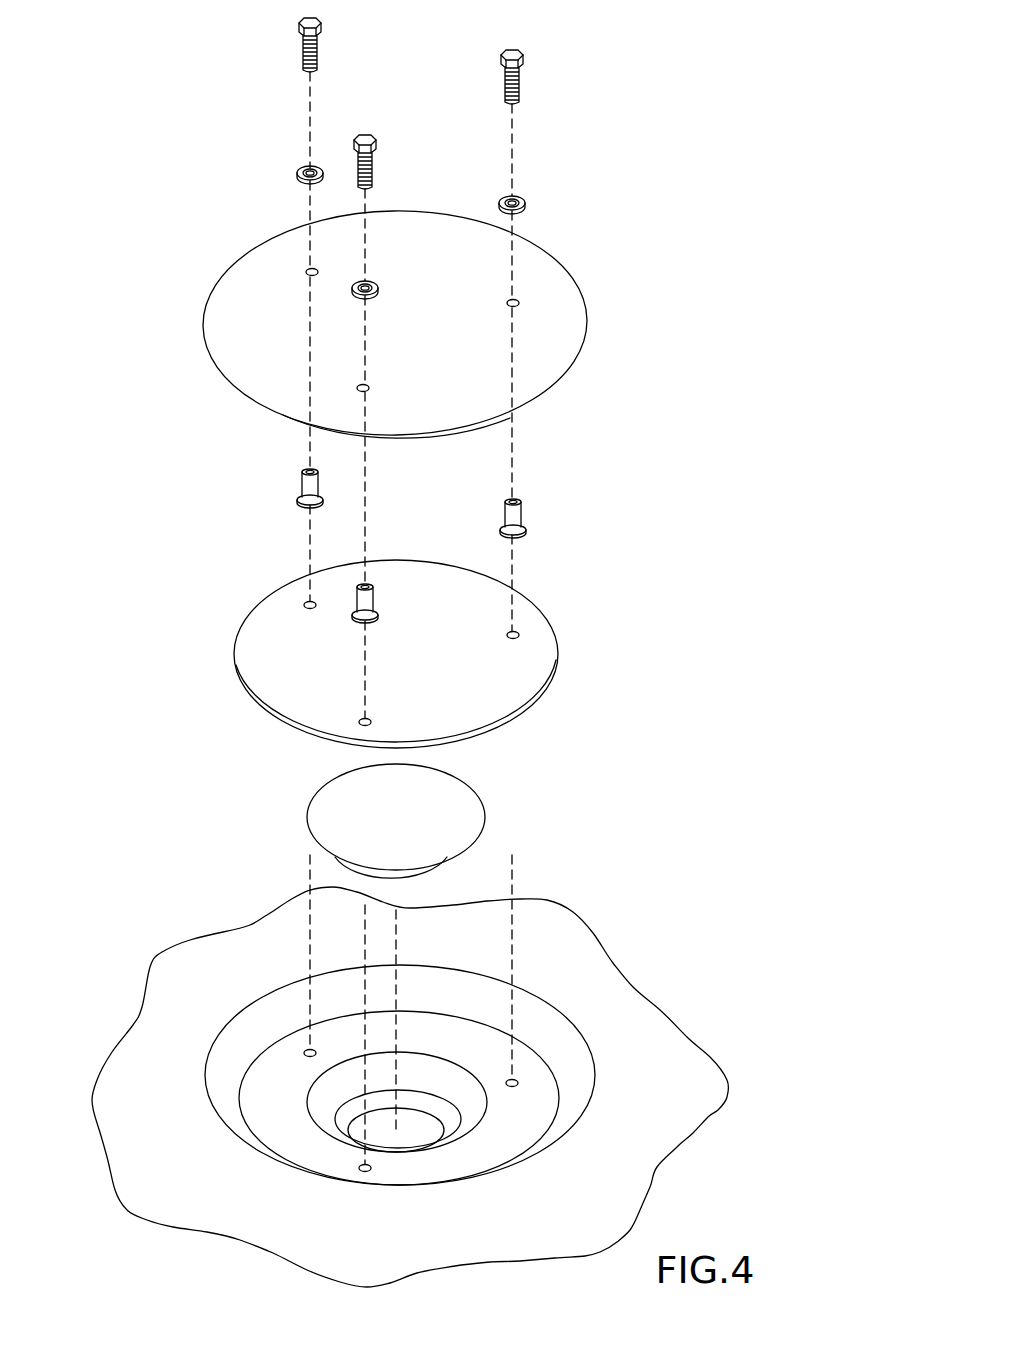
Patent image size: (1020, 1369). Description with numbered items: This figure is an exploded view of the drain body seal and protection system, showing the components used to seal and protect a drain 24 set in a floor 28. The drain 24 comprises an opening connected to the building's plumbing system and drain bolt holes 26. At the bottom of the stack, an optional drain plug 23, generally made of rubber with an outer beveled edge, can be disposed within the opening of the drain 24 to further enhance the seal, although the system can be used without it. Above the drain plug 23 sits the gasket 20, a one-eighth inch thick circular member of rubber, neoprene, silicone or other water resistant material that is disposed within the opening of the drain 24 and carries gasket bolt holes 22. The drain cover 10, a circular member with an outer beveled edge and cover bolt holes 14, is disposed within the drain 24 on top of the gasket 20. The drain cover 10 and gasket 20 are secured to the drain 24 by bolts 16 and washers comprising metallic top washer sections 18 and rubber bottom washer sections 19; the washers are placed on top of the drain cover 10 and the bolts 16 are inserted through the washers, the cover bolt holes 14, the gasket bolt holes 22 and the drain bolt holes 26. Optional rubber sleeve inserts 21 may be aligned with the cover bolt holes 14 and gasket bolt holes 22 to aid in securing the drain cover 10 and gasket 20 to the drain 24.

The drain cover 10 is at (565, 285).
The cover bolt holes 14 is at (305, 272).
The bolts 16 is at (305, 72).
The metallic top washer sections 18 is at (300, 170).
The rubber bottom washer sections 19 is at (305, 185).
The gasket 20 is at (505, 717).
The rubber sleeve inserts 21 is at (301, 487).
The gasket bolt holes 22 is at (306, 608).
The drain plug 23 is at (477, 815).
The drain 24 is at (560, 1135).
The drain bolt holes 26 is at (305, 1054).
The floor 28 is at (688, 1122).